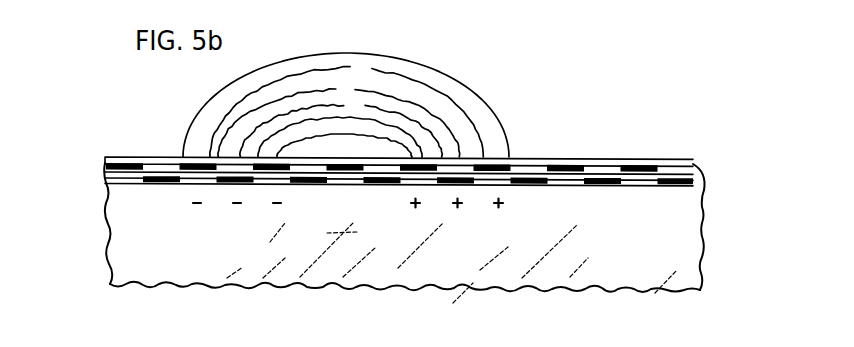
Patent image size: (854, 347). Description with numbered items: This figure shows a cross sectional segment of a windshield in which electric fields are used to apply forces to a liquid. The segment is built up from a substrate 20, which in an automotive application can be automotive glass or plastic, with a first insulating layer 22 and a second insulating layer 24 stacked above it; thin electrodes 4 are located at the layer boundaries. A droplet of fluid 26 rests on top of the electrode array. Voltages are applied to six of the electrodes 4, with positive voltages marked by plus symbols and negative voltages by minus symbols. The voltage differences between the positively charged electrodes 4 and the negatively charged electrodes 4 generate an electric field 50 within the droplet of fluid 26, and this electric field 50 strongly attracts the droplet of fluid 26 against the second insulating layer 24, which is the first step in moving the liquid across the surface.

The electrodes 4 is at (167, 176).
The substrate 20 is at (143, 213).
The first insulating layer 22 is at (635, 175).
The second insulating layer 24 is at (597, 163).
The droplet of fluid 26 is at (443, 68).
The electric field 50 is at (343, 108).